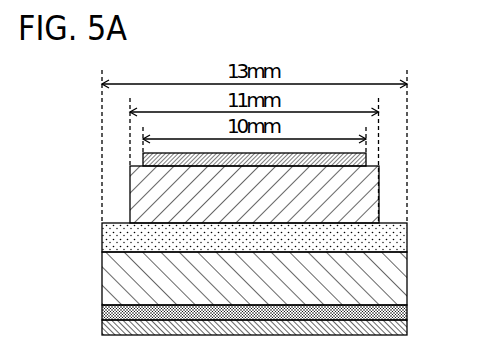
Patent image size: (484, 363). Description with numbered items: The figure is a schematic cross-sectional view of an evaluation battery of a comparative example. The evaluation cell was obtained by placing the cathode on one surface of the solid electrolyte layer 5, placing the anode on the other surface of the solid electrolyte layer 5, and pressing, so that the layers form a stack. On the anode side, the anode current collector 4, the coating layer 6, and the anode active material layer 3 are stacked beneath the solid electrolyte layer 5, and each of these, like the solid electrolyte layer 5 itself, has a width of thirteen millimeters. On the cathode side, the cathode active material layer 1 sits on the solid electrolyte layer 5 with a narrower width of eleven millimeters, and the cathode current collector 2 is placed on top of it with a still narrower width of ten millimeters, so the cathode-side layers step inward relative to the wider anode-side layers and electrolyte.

The cathode active material layer 1 is at (367, 192).
The cathode current collector 2 is at (366, 158).
The anode active material layer 3 is at (395, 277).
The anode current collector 4 is at (407, 327).
The solid electrolyte layer 5 is at (393, 234).
The coating layer 6 is at (407, 310).